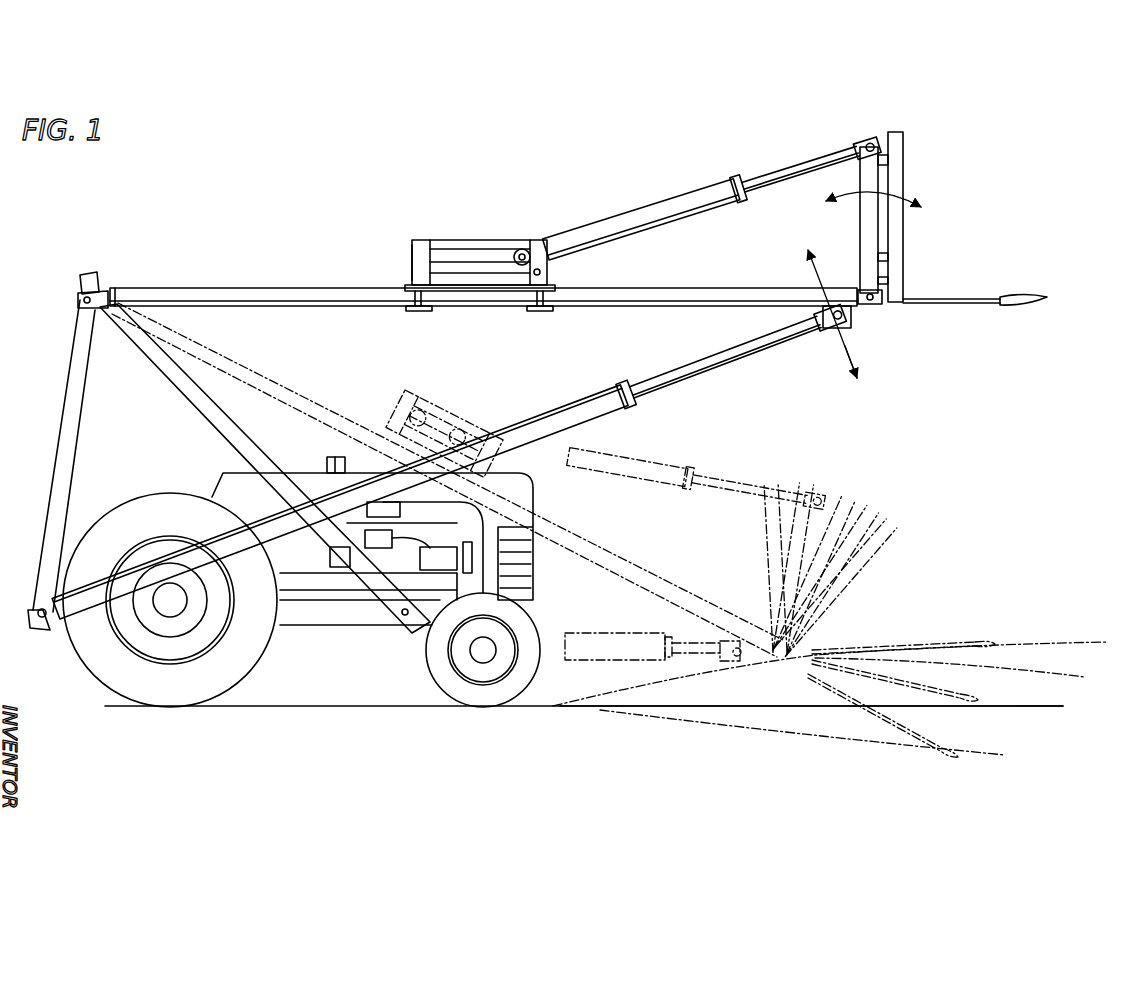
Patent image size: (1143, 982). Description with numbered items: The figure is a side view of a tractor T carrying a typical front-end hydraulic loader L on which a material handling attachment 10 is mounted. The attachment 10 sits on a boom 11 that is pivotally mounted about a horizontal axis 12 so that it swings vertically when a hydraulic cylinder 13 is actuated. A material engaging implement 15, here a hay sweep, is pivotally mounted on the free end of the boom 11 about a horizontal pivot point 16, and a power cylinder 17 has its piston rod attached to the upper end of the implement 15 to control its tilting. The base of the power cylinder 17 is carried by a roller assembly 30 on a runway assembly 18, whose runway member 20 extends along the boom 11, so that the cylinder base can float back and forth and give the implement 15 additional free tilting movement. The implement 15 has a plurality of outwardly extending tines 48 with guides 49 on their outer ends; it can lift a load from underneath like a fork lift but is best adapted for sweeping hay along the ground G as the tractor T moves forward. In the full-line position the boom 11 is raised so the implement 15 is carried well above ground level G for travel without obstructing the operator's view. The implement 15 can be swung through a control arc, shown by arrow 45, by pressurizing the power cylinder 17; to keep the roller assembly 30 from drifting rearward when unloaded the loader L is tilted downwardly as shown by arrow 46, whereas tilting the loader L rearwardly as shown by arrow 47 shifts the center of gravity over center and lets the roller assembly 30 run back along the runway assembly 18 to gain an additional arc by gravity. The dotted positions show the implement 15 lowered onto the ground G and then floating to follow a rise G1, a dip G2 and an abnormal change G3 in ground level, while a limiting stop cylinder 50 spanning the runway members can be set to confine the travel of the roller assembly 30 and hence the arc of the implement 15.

The material handling attachment 10 is at (596, 190).
The boom 11 is at (315, 294).
The horizontal axis 12 is at (78, 300).
The hydraulic cylinder 13 is at (593, 401).
The material engaging implement 15 is at (947, 251).
The horizontal pivot point 16 is at (878, 304).
The power cylinder 17 is at (710, 192).
The runway assembly 18 is at (462, 220).
The runway member 20 is at (412, 252).
The roller assembly 30 is at (522, 249).
The control arc arrow 45 is at (915, 193).
The downward tilt arrow 46 is at (860, 366).
The rearward tilt arrow 47 is at (821, 284).
The tines 48 is at (955, 304).
The guides 49 is at (1038, 301).
The limiting stop cylinder 50 is at (545, 272).
The tractor T is at (171, 461).
The front-end hydraulic loader L is at (775, 390).
The ground level G is at (1040, 705).
The ground rise G1 is at (1082, 678).
The ground dip G2 is at (985, 755).
The abnormal ground level change G3 is at (1085, 644).